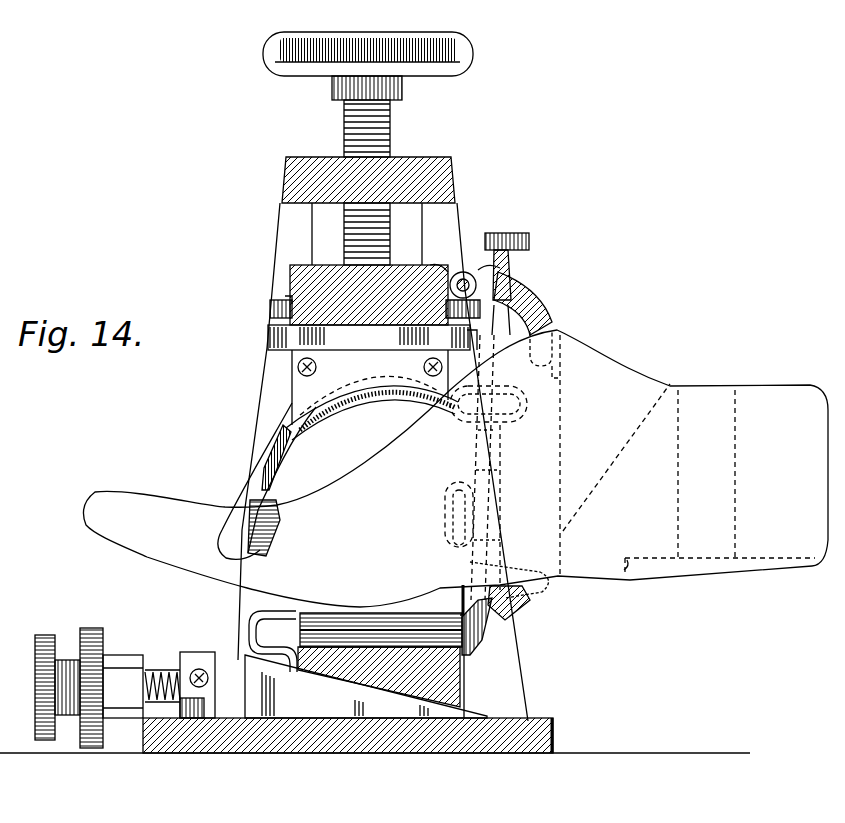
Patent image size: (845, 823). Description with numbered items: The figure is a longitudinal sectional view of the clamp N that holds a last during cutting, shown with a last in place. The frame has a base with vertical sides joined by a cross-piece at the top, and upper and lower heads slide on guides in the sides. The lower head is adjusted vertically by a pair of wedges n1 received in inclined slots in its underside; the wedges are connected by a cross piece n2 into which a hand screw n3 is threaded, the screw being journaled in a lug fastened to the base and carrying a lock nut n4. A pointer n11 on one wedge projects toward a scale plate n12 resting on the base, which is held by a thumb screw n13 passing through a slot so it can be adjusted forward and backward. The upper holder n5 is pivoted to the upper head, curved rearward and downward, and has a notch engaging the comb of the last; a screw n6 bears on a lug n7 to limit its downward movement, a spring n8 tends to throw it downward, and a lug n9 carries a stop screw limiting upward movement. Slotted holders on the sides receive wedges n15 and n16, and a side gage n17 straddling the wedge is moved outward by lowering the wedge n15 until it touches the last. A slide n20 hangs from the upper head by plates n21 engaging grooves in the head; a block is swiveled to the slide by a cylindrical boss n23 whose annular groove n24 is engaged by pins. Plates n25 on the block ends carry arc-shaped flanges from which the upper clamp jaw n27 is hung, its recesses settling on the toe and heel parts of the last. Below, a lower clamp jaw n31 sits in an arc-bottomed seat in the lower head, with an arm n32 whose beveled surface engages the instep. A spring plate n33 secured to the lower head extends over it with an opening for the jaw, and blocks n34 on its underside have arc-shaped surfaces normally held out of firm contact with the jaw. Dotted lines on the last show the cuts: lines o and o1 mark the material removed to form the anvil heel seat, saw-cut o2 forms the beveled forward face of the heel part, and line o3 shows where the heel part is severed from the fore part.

The clamp N is at (290, 241).
The wedges n1 is at (366, 686).
The cross piece n2 is at (199, 662).
The hand screw n3 is at (161, 670).
The lock nut n4 is at (95, 630).
The upper holder n5 is at (552, 292).
The screw n6 is at (518, 259).
The lug n7 is at (514, 320).
The spring n8 is at (467, 272).
The lug n9 is at (290, 300).
The pointer n11 is at (209, 677).
The scale plate n12 is at (180, 718).
The thumb screw n13 is at (210, 696).
The wedge n15 is at (470, 553).
The wedge n16 is at (495, 492).
The side gage n17 is at (515, 602).
The slide n20 is at (372, 322).
The plates n21 is at (462, 318).
The cylindrical boss n23 is at (362, 352).
The annular groove n24 is at (280, 311).
The plates n25 is at (310, 418).
The upper clamp jaw n27 is at (352, 408).
The lower clamp jaw n31 is at (482, 640).
The arm n32 is at (540, 588).
The spring plate n33 is at (357, 614).
The blocks n34 is at (462, 683).
The saw-cut line o is at (714, 572).
The saw-cut line o1 is at (630, 572).
The saw-cut o2 is at (624, 452).
The saw-cut line o3 is at (563, 456).